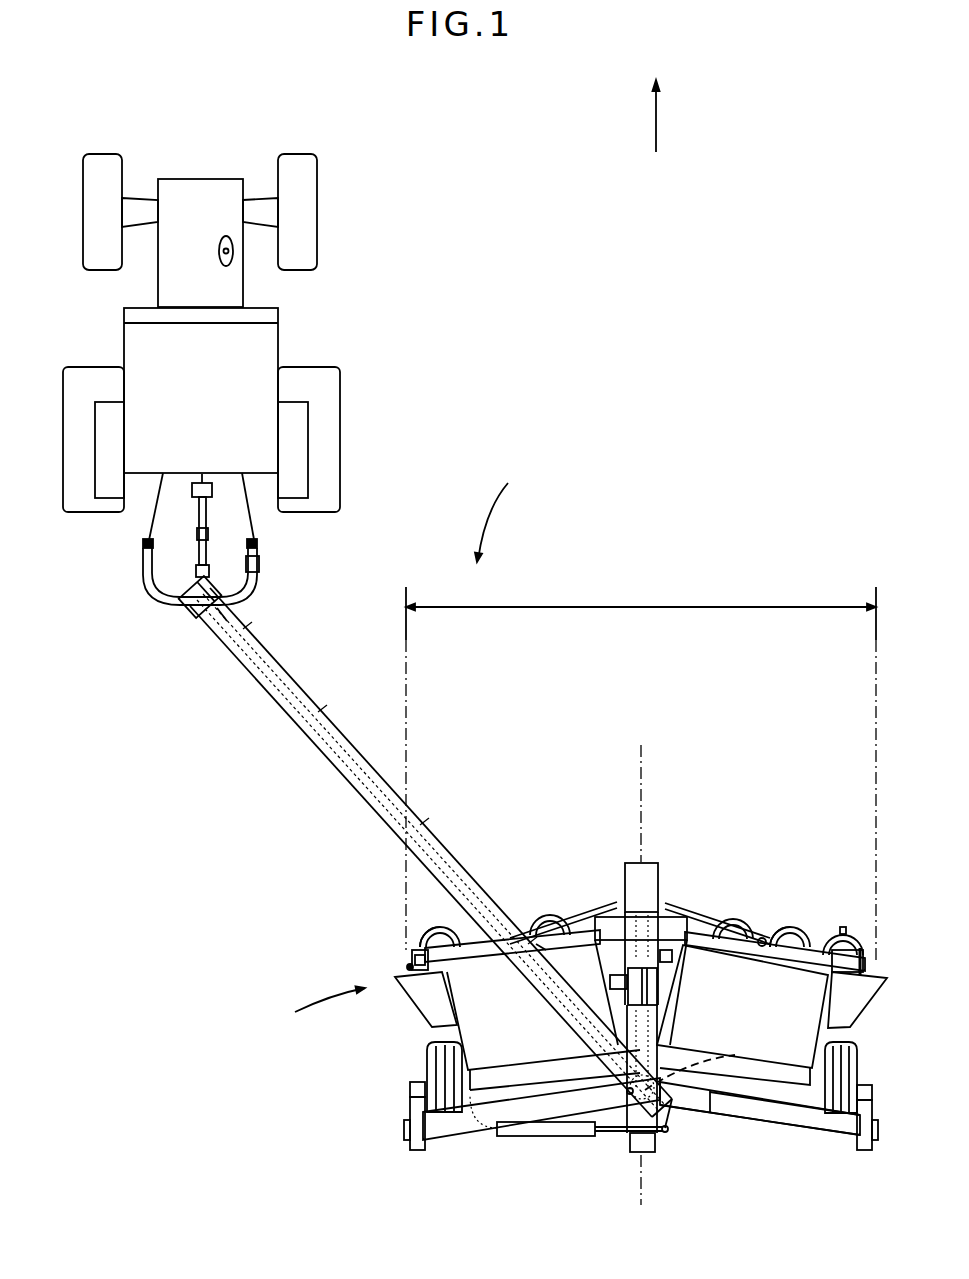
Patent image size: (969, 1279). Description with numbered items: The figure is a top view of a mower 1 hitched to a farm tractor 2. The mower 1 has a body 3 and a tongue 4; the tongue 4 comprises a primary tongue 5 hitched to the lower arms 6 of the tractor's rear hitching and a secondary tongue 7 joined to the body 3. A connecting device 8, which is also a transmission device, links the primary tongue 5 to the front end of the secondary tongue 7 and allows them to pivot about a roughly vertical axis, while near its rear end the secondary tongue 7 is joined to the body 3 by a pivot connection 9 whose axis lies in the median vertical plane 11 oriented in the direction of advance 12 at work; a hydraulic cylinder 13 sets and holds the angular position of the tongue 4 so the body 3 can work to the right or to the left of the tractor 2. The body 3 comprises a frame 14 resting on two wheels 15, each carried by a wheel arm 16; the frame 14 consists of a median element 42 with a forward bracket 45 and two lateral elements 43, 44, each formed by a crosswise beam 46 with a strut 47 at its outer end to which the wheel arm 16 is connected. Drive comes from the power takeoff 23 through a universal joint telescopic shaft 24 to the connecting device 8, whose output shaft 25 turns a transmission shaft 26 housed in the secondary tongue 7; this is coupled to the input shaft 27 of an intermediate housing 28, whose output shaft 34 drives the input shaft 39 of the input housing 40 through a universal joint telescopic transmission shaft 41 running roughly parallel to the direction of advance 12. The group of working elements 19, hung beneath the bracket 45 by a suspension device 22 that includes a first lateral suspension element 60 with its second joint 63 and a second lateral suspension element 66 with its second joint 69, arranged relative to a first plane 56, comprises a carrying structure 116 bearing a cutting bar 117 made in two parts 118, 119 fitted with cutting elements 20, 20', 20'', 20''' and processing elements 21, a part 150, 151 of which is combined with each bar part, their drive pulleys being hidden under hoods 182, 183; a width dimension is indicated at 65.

The mower 1 is at (498, 511).
The farm tractor 2 is at (275, 333).
The body 3 is at (321, 1007).
The tongue 4 is at (313, 709).
The primary tongue 5 is at (259, 575).
The lower arms 6 is at (148, 520).
The secondary tongue 7 is at (311, 741).
The connecting device 8 is at (194, 613).
The pivot connection 9 is at (676, 1110).
The median vertical plane 11 is at (641, 1192).
The direction of advance 12 is at (656, 133).
The hydraulic cylinder 13 is at (580, 1137).
The frame 14 is at (787, 1148).
The wheels 15 is at (427, 1055).
The wheel arm 16 is at (410, 1088).
The group of working elements 19 is at (794, 904).
The cutting elements 20 is at (586, 910).
The cutting elements 20' is at (676, 917).
The cutting elements 20'' is at (868, 940).
The tine carrier 20''' is at (404, 939).
The processing elements 21 is at (460, 1037).
The suspension device 22 is at (673, 892).
The power takeoff 23 is at (201, 481).
The universal joint telescopic shaft 24 is at (199, 533).
The output shaft 25 is at (224, 611).
The transmission shaft 26 is at (366, 800).
The input shaft 27 is at (629, 1095).
The intermediate housing 28 is at (701, 1061).
The output shaft 34 is at (675, 1028).
The input shaft 39 is at (673, 962).
The input housing 40 is at (612, 914).
The universal joint telescopic transmission shaft 41 is at (656, 986).
The median element 42 is at (612, 985).
The lateral element 43 is at (535, 1137).
The lateral element 44 is at (748, 1122).
The bracket 45 is at (632, 866).
The beam 46 is at (453, 1125).
The strut 47 is at (418, 1140).
The first plane 56 is at (641, 748).
The first lateral suspension element 60 is at (731, 912).
The second joint 63 is at (759, 946).
The working width 65 is at (677, 607).
The second lateral suspension element 66 is at (574, 916).
The second joint 69 is at (541, 950).
The carrying structure 116 is at (487, 970).
The cutting bar 117 is at (808, 907).
The cutting bar part 118 is at (863, 929).
The cutting bar part 119 is at (421, 928).
The part of processing elements 150 is at (754, 1011).
The part of processing elements 151 is at (484, 1031).
The hood 182 is at (864, 965).
The hood 183 is at (407, 967).